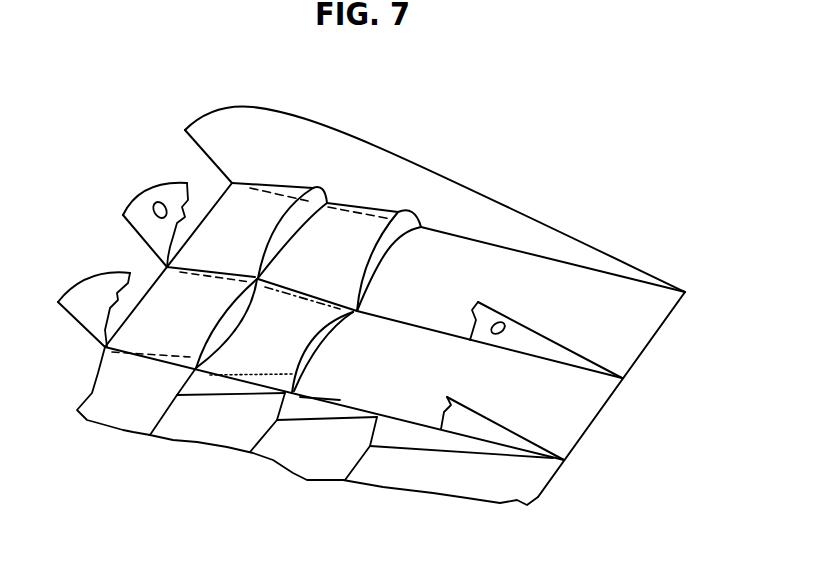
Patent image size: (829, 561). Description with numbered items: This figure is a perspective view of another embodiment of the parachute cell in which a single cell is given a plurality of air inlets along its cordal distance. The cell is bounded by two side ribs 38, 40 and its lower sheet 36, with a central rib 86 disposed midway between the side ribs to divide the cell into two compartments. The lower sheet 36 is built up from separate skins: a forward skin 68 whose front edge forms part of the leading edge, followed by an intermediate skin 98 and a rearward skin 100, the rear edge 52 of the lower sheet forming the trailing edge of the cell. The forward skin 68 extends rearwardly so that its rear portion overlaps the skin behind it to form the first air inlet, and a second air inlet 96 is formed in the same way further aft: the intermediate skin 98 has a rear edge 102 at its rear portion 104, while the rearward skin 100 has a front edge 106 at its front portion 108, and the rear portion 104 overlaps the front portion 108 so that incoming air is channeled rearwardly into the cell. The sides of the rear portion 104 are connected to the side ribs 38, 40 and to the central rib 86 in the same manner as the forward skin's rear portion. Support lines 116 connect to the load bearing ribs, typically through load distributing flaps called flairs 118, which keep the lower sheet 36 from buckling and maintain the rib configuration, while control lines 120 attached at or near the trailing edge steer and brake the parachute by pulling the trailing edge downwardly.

The lower sheet 36 is at (568, 412).
The side rib 38 is at (487, 432).
The side rib 40 is at (447, 187).
The rear edge of lower sheet 52 is at (647, 352).
The forward skin 68 is at (257, 199).
The central rib 86 is at (532, 345).
The second air inlet 96 is at (323, 350).
The intermediate skin 98 is at (345, 273).
The rearward skin 100 is at (548, 297).
The rear edge of intermediate skin 102 is at (331, 318).
The rear portion of intermediate skin 104 is at (375, 243).
The front edge of rearward skin 106 is at (392, 239).
The front portion of rearward skin 108 is at (302, 382).
The support lines 116 is at (165, 413).
The flairs 118 is at (288, 405).
The control lines 120 is at (541, 487).